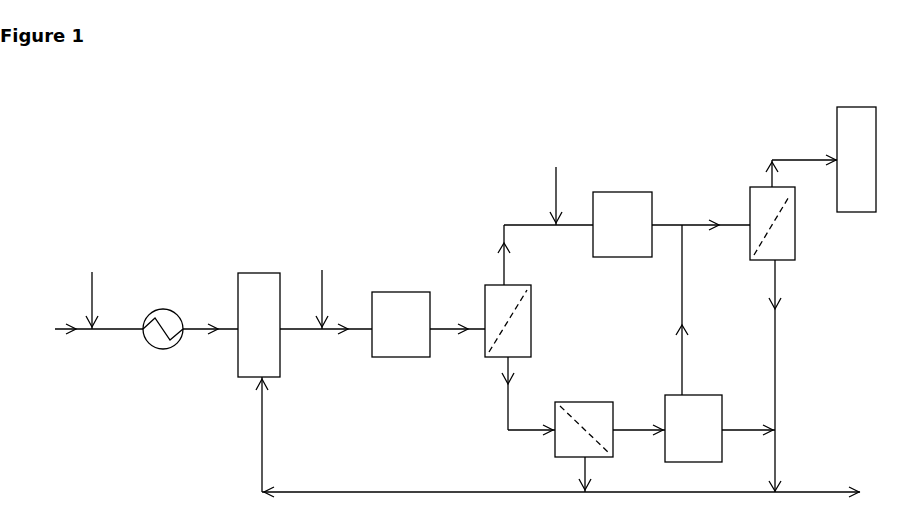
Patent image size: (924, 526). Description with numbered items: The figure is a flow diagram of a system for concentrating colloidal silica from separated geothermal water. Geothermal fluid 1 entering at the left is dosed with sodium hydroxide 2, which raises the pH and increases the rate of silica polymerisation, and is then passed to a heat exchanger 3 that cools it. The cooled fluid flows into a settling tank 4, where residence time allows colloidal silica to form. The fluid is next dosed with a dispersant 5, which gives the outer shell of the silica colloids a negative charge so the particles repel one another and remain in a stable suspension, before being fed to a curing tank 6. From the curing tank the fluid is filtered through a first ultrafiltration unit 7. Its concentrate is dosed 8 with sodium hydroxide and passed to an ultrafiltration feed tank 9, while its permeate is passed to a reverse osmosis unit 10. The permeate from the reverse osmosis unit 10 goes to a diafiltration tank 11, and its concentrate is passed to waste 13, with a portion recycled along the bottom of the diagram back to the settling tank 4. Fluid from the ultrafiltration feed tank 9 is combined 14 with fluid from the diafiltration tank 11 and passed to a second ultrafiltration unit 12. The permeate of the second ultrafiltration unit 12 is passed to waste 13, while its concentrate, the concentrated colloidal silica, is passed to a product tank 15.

The geothermal fluid 1 is at (61, 329).
The sodium hydroxide 2 is at (92, 289).
The heat exchanger 3 is at (165, 332).
The settling tank 4 is at (305, 325).
The dispersant 5 is at (322, 287).
The curing tank 6 is at (428, 324).
The first ultrafiltration unit 7 is at (539, 291).
The sodium hydroxide dosing 8 is at (556, 184).
The ultrafiltration feed tank 9 is at (671, 224).
The reverse osmosis unit 10 is at (557, 424).
The diafiltration tank 11 is at (694, 343).
The second ultrafiltration unit 12 is at (793, 323).
The waste 13 is at (575, 438).
The combining point 14 is at (704, 217).
The product tank 15 is at (856, 159).